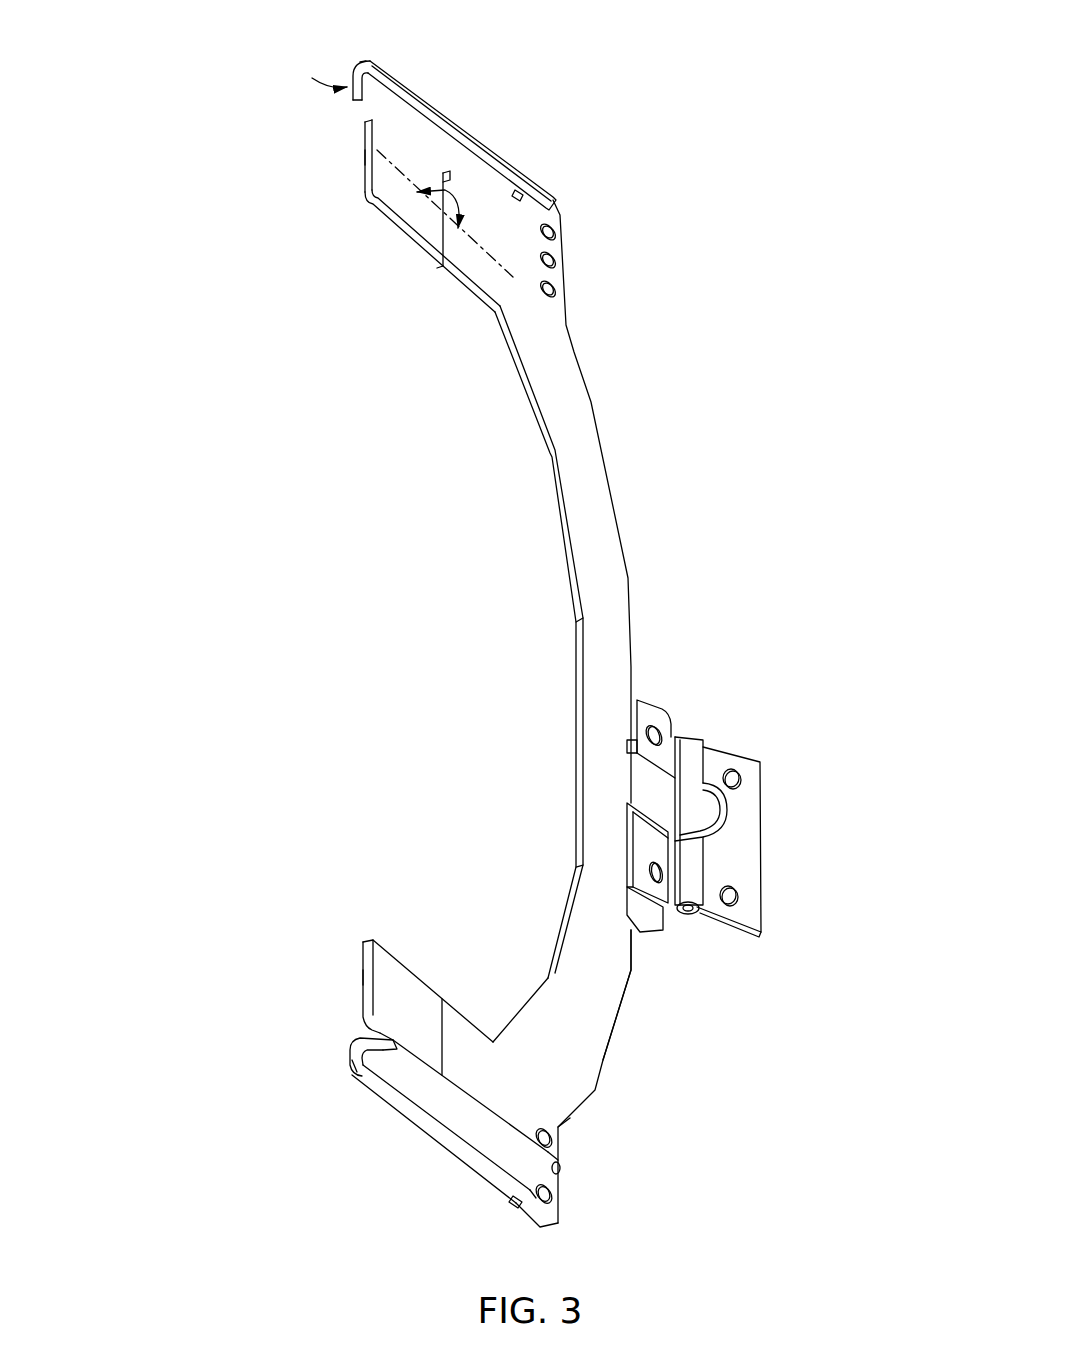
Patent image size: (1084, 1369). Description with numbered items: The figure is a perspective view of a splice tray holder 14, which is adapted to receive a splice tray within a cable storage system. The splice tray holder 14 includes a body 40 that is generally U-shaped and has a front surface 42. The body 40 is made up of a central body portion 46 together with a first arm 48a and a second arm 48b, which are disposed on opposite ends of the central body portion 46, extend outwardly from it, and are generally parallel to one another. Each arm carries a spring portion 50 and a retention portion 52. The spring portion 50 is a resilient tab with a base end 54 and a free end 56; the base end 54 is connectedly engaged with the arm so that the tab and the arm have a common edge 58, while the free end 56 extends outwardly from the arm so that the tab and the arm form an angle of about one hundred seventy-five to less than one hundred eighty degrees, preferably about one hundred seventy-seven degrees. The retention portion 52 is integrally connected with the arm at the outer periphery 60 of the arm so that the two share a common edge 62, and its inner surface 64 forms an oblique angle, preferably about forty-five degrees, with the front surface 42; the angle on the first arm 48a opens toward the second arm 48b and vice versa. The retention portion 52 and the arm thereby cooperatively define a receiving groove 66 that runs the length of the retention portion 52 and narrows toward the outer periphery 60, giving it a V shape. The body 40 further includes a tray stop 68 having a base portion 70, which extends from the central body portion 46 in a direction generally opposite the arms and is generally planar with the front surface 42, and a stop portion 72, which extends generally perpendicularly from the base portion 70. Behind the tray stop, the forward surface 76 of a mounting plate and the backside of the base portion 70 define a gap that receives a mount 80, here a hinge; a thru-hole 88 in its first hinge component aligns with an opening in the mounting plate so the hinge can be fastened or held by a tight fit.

The splice tray holder 14 is at (751, 242).
The body 40 is at (641, 552).
The front surface 42 is at (590, 700).
The central body portion 46 is at (613, 943).
The first arm 48a is at (443, 285).
The second arm 48b is at (467, 1001).
The spring portion 50 is at (355, 178).
The retention portion 52 is at (482, 131).
The base end 54 is at (434, 233).
The free end 56 is at (386, 183).
The common edge 58 is at (441, 242).
The outer periphery 60 is at (538, 1223).
The common edge 62 is at (423, 1118).
The inner surface 64 is at (388, 73).
The receiving groove 66 is at (352, 1052).
The tray stop 68 is at (664, 765).
The base portion 70 is at (652, 790).
The stop portion 72 is at (708, 788).
The forward surface 76 is at (645, 700).
The mount 80 is at (731, 943).
The thru-hole 88 is at (665, 903).